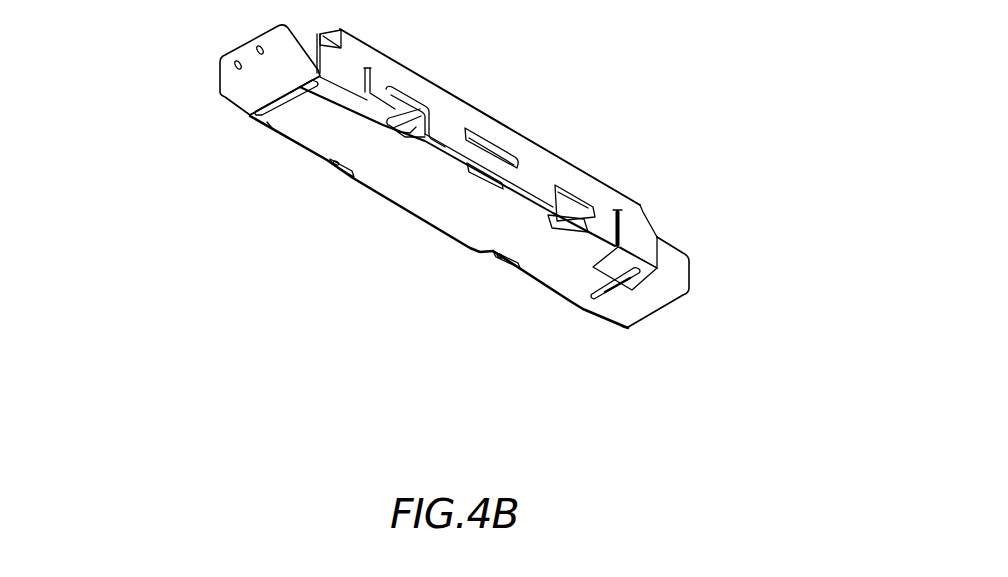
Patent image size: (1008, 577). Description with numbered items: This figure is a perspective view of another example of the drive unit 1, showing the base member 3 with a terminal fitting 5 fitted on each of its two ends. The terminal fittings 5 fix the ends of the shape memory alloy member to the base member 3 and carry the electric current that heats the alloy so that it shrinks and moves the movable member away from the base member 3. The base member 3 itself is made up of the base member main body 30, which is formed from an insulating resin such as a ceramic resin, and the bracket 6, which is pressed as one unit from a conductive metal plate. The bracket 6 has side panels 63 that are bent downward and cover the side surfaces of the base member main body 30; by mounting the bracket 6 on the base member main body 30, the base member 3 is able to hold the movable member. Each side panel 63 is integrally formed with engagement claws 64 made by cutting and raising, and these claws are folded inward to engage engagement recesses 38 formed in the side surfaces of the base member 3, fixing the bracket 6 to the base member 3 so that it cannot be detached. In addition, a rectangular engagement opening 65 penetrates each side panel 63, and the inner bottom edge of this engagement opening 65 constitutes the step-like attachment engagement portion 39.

The drive unit 1 is at (575, 318).
The base member 3 is at (727, 101).
The terminal fitting 5 is at (247, 83).
The bracket 6 is at (576, 177).
The base member main body 30 is at (582, 246).
The engagement recess 38 is at (398, 134).
The attachment engagement portion 39 is at (500, 157).
The side panel 63 is at (450, 128).
The engagement claw 64 is at (398, 130).
The engagement opening 65 is at (490, 141).